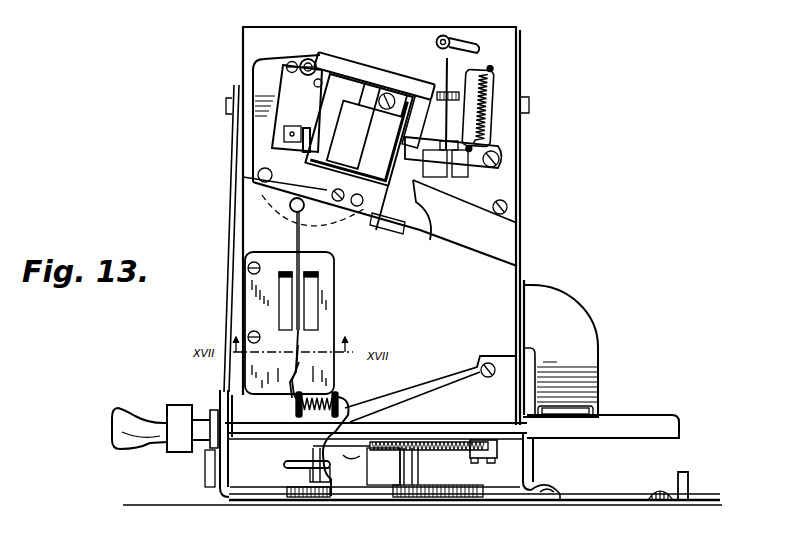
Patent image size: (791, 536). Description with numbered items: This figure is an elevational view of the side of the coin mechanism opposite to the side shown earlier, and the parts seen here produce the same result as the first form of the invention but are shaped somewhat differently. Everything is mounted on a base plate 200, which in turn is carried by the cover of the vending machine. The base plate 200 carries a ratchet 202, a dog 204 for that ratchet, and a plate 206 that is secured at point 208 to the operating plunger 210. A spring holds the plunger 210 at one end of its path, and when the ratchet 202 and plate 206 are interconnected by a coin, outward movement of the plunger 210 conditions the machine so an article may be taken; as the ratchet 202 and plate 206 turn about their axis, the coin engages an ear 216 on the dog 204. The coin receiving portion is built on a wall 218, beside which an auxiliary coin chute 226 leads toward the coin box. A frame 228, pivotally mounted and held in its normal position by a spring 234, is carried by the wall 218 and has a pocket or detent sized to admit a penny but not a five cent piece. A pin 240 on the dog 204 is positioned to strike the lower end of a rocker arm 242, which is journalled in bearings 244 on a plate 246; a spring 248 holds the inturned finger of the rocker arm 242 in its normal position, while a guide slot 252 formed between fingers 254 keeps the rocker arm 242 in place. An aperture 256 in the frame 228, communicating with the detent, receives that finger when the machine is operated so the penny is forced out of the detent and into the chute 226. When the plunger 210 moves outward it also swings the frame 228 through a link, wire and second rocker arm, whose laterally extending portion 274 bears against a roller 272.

The base plate 200 is at (603, 498).
The ratchet 202 is at (466, 486).
The dog 204 is at (272, 500).
The plate 206 is at (470, 448).
The securing point 208 is at (500, 447).
The operating plunger 210 is at (641, 419).
The ear 216 is at (327, 499).
The wall 218 is at (506, 52).
The auxiliary coin chute 226 is at (563, 316).
The frame 228 is at (369, 75).
The spring 234 is at (441, 86).
The pin 240 is at (284, 464).
The rocker arm 242 is at (305, 345).
The bearings 244 is at (340, 403).
The plate 246 is at (380, 299).
The spring 248 is at (318, 398).
The guide slot 252 is at (308, 262).
The fingers 254 is at (302, 283).
The aperture 256 is at (296, 198).
The roller 272 is at (413, 153).
The laterally extending portion 274 is at (417, 113).